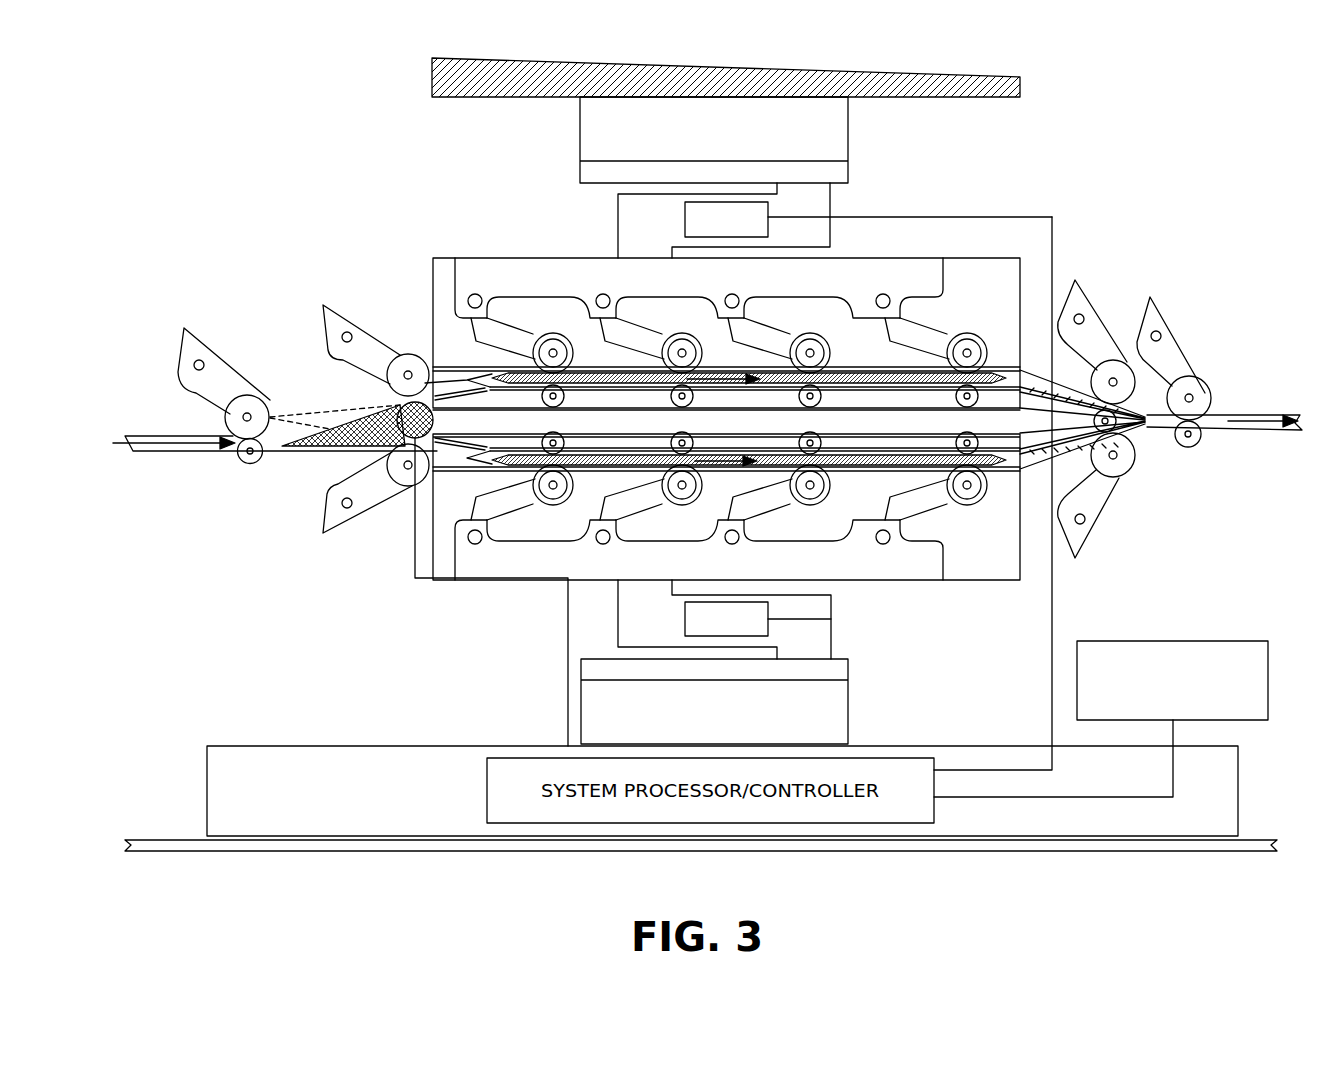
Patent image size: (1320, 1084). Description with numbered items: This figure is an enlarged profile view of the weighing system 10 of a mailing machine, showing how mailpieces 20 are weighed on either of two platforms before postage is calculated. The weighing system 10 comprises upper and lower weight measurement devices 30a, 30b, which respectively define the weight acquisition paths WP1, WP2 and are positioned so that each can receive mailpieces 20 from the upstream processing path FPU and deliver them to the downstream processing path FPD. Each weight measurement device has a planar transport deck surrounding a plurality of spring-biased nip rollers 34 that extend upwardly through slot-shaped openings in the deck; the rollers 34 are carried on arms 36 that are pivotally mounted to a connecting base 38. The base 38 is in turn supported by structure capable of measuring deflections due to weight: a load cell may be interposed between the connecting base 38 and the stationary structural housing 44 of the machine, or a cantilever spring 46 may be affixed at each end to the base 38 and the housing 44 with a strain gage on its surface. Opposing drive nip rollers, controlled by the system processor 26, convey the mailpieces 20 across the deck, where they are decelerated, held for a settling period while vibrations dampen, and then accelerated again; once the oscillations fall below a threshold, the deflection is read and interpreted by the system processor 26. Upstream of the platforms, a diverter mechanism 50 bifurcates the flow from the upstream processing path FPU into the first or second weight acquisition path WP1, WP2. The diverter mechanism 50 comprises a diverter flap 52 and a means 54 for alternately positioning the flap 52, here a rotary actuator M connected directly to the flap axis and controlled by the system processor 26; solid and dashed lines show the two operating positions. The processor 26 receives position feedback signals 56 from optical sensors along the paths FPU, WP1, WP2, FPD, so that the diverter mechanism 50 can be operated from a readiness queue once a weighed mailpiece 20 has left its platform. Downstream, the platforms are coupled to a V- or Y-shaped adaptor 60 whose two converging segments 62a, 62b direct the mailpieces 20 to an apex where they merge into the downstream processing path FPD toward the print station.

The weighing system 10 is at (708, 570).
The mailpieces 20 is at (587, 380).
The system processor 26 is at (221, 678).
The upper weight measurement device 30a is at (422, 490).
The lower weight measurement device 30b is at (310, 501).
The spring-biased nip rollers 34 is at (567, 500).
The arms 36 is at (563, 440).
The connecting base 38 is at (749, 286).
The stationary structural housing 44 is at (871, 89).
The cantilever spring 46 is at (719, 233).
The diverter mechanism 50 is at (419, 574).
The diverter flap 52 is at (365, 418).
The means for alternately positioning the flap 54 is at (402, 434).
The position feedback signals 56 is at (1220, 650).
The V- or Y-shaped adaptor 60 is at (1135, 363).
The first converging segment 62a is at (1067, 392).
The second converging segment 62b is at (1130, 427).
The first weight acquisition path WP1 is at (710, 458).
The second weight acquisition path WP2 is at (728, 383).
The upstream processing path FPU is at (164, 443).
The downstream processing path FPD is at (1248, 423).